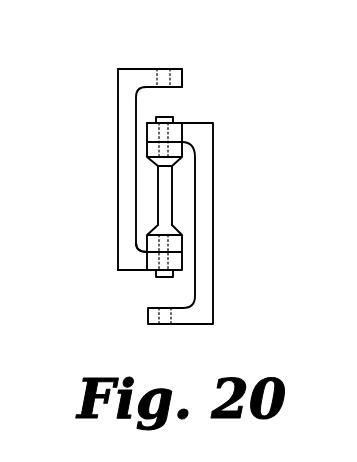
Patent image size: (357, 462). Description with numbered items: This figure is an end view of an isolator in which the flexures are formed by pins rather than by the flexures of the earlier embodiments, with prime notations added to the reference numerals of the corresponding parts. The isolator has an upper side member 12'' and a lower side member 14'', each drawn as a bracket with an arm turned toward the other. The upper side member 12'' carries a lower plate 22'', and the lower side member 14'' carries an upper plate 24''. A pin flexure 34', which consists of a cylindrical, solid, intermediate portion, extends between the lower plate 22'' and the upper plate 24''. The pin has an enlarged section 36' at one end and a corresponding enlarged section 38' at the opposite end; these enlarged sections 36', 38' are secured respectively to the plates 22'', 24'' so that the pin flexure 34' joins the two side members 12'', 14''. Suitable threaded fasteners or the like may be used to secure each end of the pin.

The upper side member 12'' is at (223, 223).
The lower side member 14'' is at (107, 169).
The lower plate 22'' is at (94, 279).
The upper plate 24'' is at (210, 57).
The pin flexure 34' is at (229, 195).
The enlarged section 36' is at (224, 251).
The enlarged section 38' is at (224, 141).